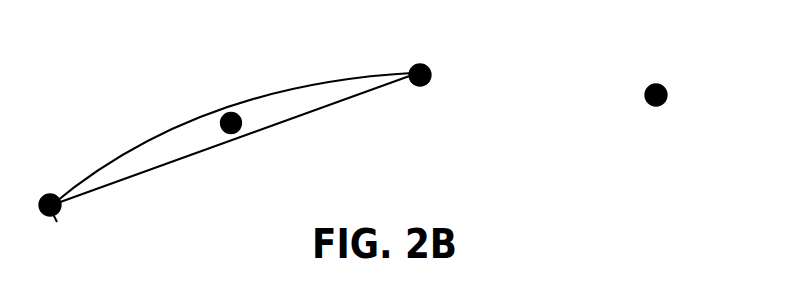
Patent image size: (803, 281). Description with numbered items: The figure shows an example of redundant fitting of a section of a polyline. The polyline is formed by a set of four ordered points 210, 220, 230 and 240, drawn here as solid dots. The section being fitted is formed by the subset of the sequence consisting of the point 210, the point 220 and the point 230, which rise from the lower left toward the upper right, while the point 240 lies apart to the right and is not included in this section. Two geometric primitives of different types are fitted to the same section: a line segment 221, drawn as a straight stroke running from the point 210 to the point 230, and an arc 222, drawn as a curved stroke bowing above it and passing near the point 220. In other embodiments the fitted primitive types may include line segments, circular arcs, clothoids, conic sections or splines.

The ordered point 210 is at (56, 196).
The ordered point 220 is at (232, 112).
The line segment 221 is at (180, 161).
The arc 222 is at (334, 73).
The ordered point 230 is at (430, 64).
The ordered point 240 is at (663, 84).